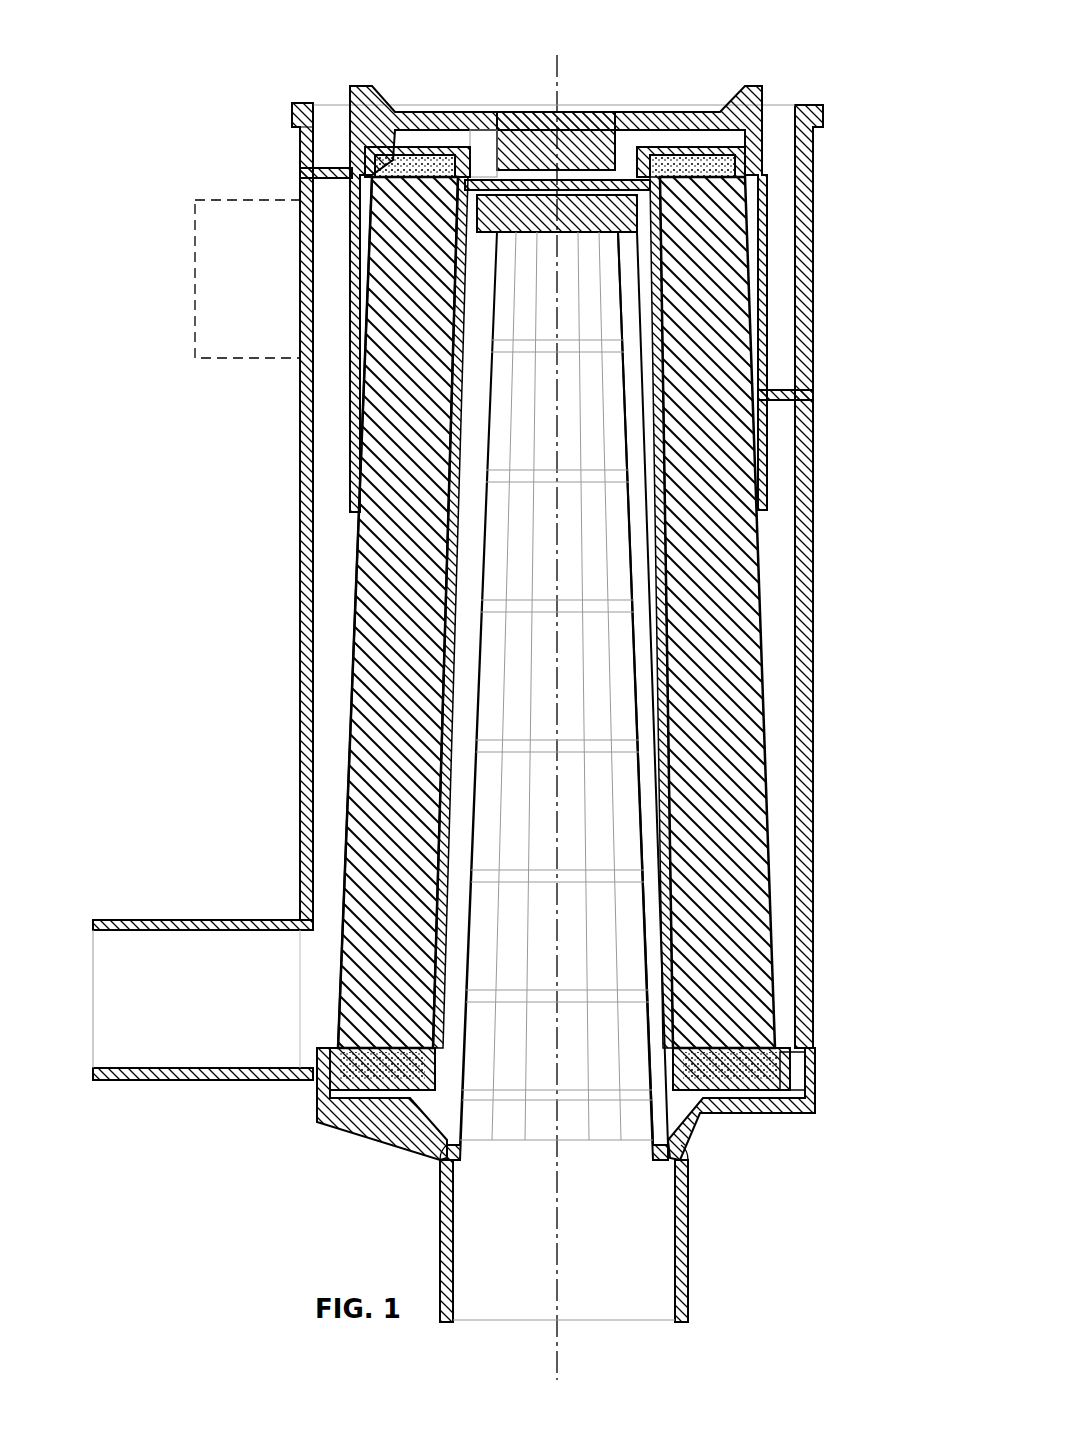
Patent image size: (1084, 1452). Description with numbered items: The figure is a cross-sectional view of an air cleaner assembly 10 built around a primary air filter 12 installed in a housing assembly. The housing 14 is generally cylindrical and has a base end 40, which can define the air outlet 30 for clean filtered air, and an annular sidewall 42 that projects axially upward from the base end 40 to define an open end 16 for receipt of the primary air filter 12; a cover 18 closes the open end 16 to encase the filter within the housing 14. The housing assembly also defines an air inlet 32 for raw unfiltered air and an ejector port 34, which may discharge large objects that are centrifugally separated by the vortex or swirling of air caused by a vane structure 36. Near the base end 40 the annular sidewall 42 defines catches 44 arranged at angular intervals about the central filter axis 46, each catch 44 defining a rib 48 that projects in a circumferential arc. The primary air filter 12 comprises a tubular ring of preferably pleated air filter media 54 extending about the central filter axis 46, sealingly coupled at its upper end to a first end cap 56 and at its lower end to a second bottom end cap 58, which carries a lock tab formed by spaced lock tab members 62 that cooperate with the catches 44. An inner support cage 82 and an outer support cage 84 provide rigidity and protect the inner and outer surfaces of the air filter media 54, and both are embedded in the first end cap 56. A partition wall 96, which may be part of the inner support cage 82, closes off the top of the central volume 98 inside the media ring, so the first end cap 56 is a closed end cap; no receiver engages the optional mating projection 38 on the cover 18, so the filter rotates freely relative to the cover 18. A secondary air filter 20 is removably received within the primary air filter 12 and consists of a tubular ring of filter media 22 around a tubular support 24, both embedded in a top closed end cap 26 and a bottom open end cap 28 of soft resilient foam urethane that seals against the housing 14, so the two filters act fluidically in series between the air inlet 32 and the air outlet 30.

The air cleaner assembly 10 is at (195, 45).
The primary air filter 12 is at (477, 612).
The housing 14 is at (300, 660).
The open end 16 is at (300, 108).
The cover 18 is at (385, 86).
The secondary air filter 20 is at (556, 670).
The filter media 22 is at (650, 757).
The tubular support 24 is at (628, 805).
The top closed end cap 26 is at (648, 363).
The bottom open end cap 28 is at (692, 1155).
The air outlet 30 is at (635, 1305).
The air inlet 32 is at (195, 215).
The ejector port 34 is at (133, 920).
The vane structure 36 is at (792, 402).
The mating projection 38 is at (598, 125).
The base end 40 is at (800, 1115).
The annular sidewall 42 is at (812, 940).
The catches 44 is at (300, 1045).
The central filter axis 46 is at (557, 1367).
The rib 48 is at (318, 1050).
The air filter media 54 is at (378, 710).
The first end cap 56 is at (430, 125).
The second bottom end cap 58 is at (320, 1128).
The lock tab members 62 is at (800, 1065).
The inner support cage 82 is at (440, 555).
The outer support cage 84 is at (355, 593).
The partition wall 96 is at (496, 170).
The central volume 98 is at (455, 212).